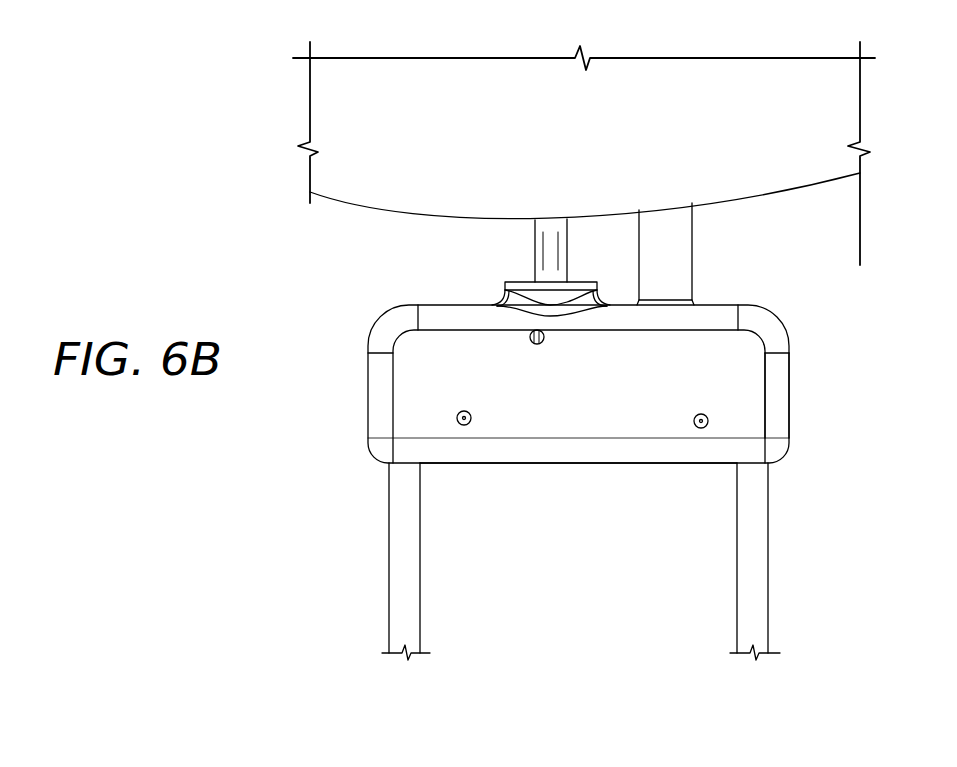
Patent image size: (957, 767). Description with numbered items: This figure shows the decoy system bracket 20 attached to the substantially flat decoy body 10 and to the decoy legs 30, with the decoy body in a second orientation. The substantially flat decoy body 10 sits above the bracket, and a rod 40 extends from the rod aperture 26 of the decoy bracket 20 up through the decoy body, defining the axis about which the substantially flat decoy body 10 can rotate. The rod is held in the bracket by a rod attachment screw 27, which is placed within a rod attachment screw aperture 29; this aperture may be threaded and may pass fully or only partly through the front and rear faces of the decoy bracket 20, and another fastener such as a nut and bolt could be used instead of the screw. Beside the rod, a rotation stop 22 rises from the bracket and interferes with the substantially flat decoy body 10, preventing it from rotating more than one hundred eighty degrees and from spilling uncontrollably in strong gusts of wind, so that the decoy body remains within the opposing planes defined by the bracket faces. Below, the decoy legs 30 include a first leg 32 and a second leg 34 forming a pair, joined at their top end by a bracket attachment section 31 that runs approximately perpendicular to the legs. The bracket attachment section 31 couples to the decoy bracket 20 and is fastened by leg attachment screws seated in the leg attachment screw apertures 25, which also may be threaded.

The substantially flat decoy body 10 is at (369, 205).
The rod 40 is at (534, 232).
The rotation stop 22 is at (673, 238).
The rod aperture 26 is at (505, 291).
The decoy system bracket 20 is at (367, 415).
The rod attachment screw 27 is at (802, 390).
The rod attachment screw aperture 29 is at (531, 342).
The leg attachment screw aperture 25 is at (470, 423).
The bracket attachment section 31 is at (577, 464).
The decoy legs 30 is at (572, 561).
The second leg 34 is at (388, 522).
The first leg 32 is at (770, 535).